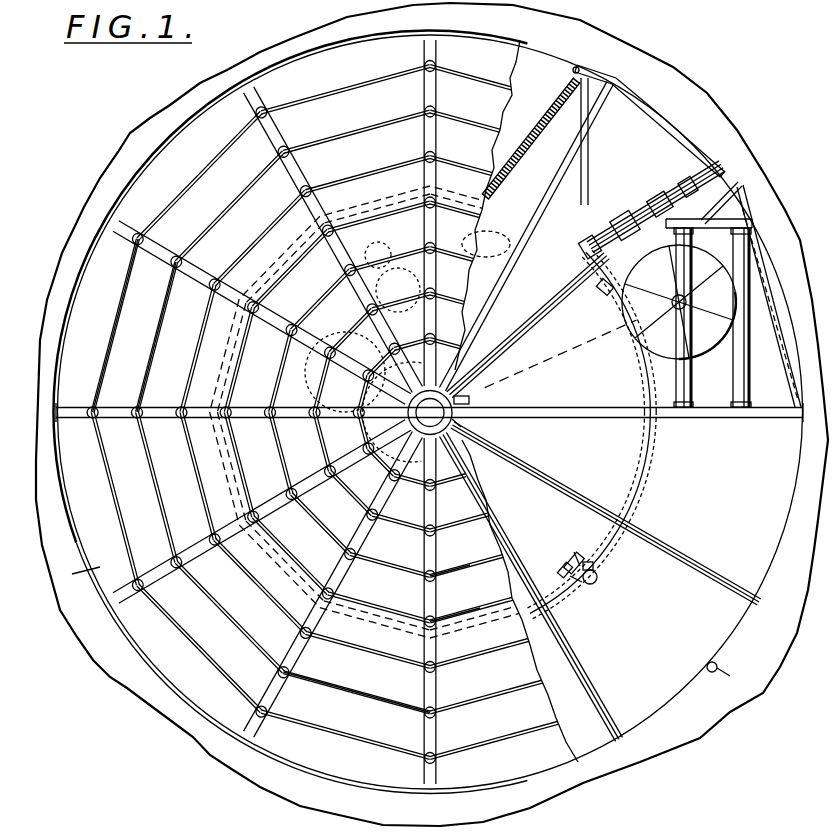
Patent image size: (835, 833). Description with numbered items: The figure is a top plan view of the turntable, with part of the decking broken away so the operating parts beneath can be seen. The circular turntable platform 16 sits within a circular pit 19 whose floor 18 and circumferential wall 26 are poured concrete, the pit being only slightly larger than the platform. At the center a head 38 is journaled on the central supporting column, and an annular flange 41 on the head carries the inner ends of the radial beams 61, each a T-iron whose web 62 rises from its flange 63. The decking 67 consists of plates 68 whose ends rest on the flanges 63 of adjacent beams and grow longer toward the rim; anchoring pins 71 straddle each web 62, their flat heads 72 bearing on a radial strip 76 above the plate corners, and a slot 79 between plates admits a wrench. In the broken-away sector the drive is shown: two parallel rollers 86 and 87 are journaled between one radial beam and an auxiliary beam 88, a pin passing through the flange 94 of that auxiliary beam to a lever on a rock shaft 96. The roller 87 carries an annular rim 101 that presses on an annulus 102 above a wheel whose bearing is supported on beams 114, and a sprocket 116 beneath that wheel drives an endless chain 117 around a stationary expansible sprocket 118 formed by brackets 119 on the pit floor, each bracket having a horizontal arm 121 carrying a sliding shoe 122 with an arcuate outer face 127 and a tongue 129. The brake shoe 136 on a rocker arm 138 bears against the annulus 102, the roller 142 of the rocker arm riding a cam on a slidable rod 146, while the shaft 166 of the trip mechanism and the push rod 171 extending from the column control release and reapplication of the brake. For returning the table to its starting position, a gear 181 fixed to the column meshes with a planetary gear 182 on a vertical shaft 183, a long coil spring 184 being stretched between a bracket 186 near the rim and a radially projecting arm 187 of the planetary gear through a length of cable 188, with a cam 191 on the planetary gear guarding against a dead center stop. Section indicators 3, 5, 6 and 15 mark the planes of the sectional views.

The section line 3- 3 is at (788, 208).
The section line 5- 5 is at (598, 186).
The section line 6- 6 is at (556, 236).
The section line 15- 15 is at (722, 382).
The turntable platform 16 is at (165, 170).
The floor 18 is at (680, 608).
The pit 19 is at (731, 674).
The circumferential wall 26 is at (668, 712).
The head 38 is at (430, 413).
The annular flange 41 is at (457, 424).
The beams 61 is at (660, 542).
The web 62 is at (583, 672).
The flange 63 is at (566, 642).
The decking 67 is at (222, 262).
The plates 68 is at (158, 238).
The anchoring pins 71 is at (444, 572).
The flat head 72 is at (445, 620).
The strip 76 is at (320, 622).
The slot 79 is at (293, 683).
The roller 86 is at (747, 418).
The roller 87 is at (688, 418).
The auxiliary beam 88 is at (742, 218).
The flange 94 is at (721, 203).
The rock shaft 96 is at (683, 190).
The annular rim 101 is at (679, 302).
The annulus 102 is at (630, 372).
The beams 114 is at (612, 345).
The sprocket 116 is at (662, 352).
The endless chain 117 is at (648, 458).
The stationary expansible sprocket 118 is at (557, 540).
The brackets 119 is at (560, 560).
The horizontal arm 121 is at (578, 556).
The shoe 122 is at (574, 574).
The arcuate outer face 127 is at (596, 569).
The tongue 129 is at (598, 579).
The shoe 136 is at (604, 292).
The rocker arm 138 is at (596, 253).
The roller 142 is at (624, 220).
The rod 146 is at (648, 200).
The shaft 166 is at (662, 168).
The push rod 171 is at (542, 320).
The gear 181 is at (471, 401).
The planetary gear 182 is at (334, 372).
The vertical shaft 183 is at (380, 253).
The coil spring 184 is at (550, 128).
The bracket 186 is at (605, 80).
The radially projecting arm 187 is at (400, 288).
The length of cable 188 is at (486, 244).
The cam 191 is at (366, 412).